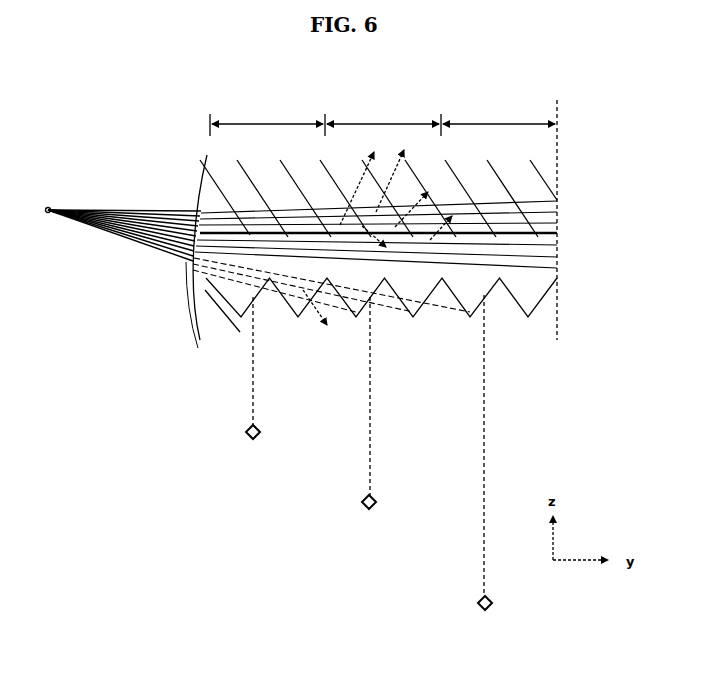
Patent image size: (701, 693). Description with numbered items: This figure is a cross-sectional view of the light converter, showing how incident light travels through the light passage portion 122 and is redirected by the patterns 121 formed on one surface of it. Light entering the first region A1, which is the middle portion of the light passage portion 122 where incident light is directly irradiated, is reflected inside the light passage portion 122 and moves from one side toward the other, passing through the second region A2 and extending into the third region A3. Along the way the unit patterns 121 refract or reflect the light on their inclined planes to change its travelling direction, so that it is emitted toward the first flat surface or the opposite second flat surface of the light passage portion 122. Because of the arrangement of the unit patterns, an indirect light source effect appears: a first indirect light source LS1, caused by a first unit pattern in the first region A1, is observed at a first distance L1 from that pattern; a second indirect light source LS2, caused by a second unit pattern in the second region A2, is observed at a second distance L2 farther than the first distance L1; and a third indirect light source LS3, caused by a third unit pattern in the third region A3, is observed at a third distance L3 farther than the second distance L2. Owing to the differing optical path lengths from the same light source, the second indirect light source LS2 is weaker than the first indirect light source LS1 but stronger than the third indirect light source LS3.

The patterns 121 is at (558, 287).
The light passage portion 122 is at (557, 233).
The first distance L1 is at (252, 404).
The second distance L2 is at (369, 430).
The third distance L3 is at (483, 496).
The first indirect light source LS1 is at (250, 440).
The second indirect light source LS2 is at (366, 512).
The third indirect light source LS3 is at (482, 613).
The first region A1 is at (266, 120).
The second region A2 is at (382, 120).
The third region A3 is at (498, 120).